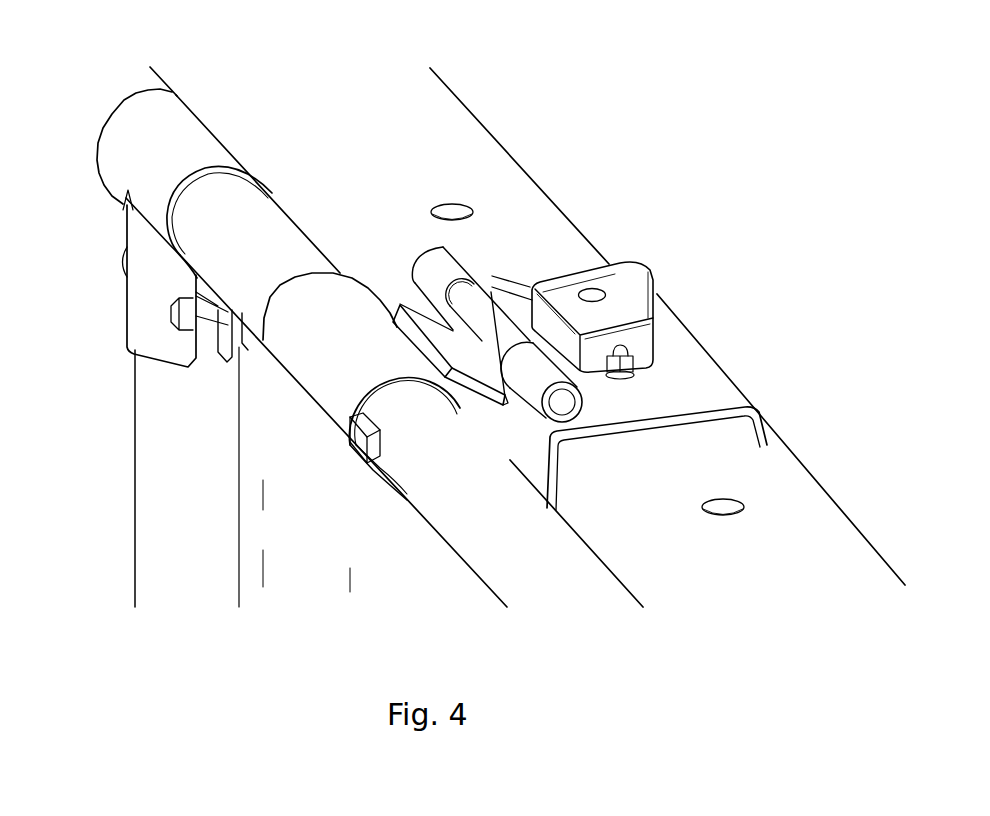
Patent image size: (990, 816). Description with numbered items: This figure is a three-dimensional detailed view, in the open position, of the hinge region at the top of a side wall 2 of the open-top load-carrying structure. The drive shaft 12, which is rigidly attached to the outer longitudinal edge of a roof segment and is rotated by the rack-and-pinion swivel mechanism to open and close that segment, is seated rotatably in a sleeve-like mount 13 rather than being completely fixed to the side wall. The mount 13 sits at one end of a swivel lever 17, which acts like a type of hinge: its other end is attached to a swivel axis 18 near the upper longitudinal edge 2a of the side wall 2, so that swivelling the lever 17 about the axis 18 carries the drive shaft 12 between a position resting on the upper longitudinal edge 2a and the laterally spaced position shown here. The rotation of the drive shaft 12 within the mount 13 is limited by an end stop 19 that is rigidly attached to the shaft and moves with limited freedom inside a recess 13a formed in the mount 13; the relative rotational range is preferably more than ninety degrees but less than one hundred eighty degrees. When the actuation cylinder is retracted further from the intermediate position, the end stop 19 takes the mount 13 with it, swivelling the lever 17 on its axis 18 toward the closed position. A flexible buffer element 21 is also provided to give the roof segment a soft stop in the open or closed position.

The side wall 2 is at (890, 506).
The upper longitudinal edge 2a is at (742, 460).
The drive shaft 12 is at (472, 535).
The sleeve-like mount 13 is at (310, 357).
The recess 13a is at (388, 387).
The swivel lever 17 is at (452, 346).
The swivel axis 18 is at (393, 218).
The end stop 19 is at (367, 433).
The flexible buffer element 21 is at (625, 323).